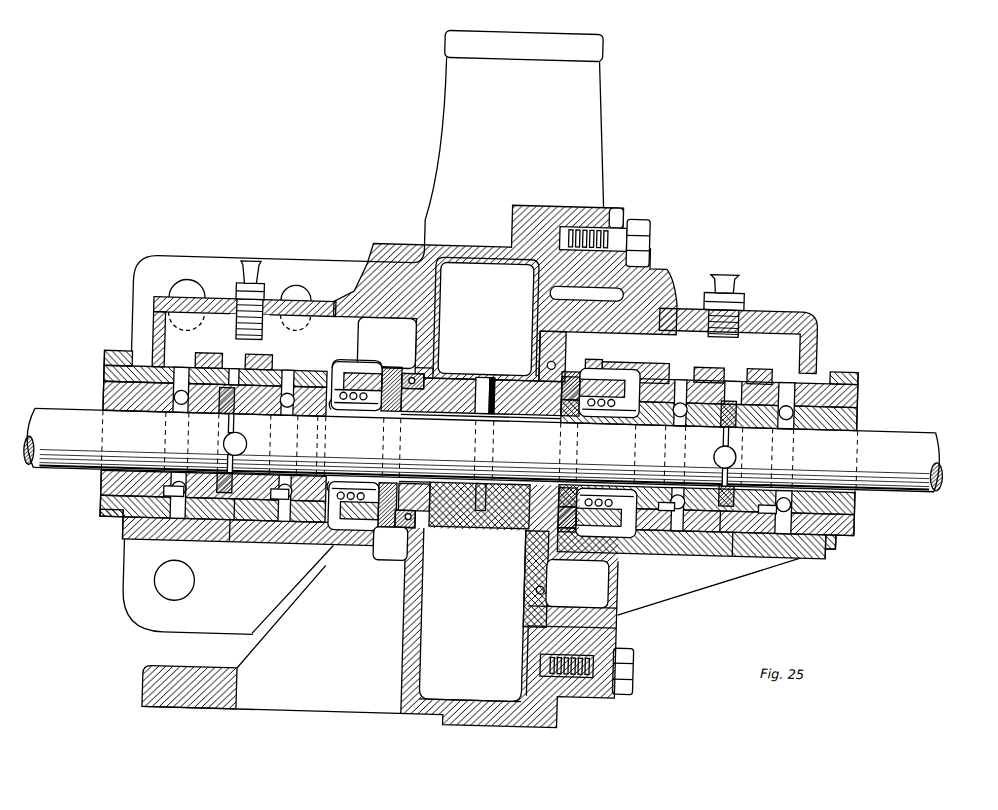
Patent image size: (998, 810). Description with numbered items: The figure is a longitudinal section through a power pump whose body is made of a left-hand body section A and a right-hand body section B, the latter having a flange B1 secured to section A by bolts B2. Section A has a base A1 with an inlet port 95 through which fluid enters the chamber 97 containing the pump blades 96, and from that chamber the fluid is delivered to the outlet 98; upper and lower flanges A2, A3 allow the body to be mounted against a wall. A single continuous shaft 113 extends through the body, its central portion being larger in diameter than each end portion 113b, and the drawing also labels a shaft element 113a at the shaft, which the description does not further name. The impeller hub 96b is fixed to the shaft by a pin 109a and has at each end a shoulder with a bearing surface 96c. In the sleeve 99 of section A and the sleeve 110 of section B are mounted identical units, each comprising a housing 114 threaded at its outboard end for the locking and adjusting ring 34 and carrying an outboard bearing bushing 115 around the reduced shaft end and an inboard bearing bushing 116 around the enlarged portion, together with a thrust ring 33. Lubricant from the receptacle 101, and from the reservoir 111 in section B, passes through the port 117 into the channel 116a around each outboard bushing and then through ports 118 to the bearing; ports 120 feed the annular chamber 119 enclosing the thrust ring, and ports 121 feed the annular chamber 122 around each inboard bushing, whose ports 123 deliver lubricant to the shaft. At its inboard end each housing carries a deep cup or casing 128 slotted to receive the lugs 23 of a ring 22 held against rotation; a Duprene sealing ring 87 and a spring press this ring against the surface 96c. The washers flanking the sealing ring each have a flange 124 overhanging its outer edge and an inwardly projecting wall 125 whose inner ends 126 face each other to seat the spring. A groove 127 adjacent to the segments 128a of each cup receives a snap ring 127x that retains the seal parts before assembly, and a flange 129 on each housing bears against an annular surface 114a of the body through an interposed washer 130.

The ring 22 is at (390, 410).
The lugs 23 is at (390, 377).
The thrust ring 33 is at (232, 535).
The locking and adjusting ring 34 is at (107, 362).
The Duprene sealing ring 87 is at (358, 411).
The inlet port 95 is at (381, 601).
The pump blades 96 is at (505, 309).
The impeller hub 96b is at (462, 380).
The bearing surface 96c is at (413, 405).
The chamber 97 is at (470, 680).
The outlet 98 is at (516, 127).
The sleeve 99 is at (127, 557).
The lubricant receptacle 101 is at (208, 305).
The pin 109a is at (493, 366).
The sleeve 110 is at (783, 550).
The lubricant reservoir 111 is at (683, 305).
The shaft 113 is at (226, 451).
The locating ball 113a is at (234, 428).
The end portion of shaft 113b is at (54, 427).
The housing 114 is at (110, 516).
The annular surface 114a is at (615, 369).
The outboard bearing bushing 115 is at (103, 493).
The inboard bearing bushing 116 is at (236, 540).
The channel 116a is at (163, 537).
The port 117 is at (183, 376).
The ports 118 is at (173, 424).
The annular chamber 119 is at (236, 538).
The ports 120 is at (233, 376).
The ports 121 is at (286, 375).
The annular chamber 122 is at (282, 540).
The ports 123 is at (290, 422).
The flange 124 is at (352, 372).
The radially inwardly projecting wall 125 is at (354, 368).
The inner ends of walls 126 is at (290, 432).
The groove 127 is at (403, 531).
The snap ring 127x is at (420, 376).
The cup or casing 128 is at (357, 532).
The segments 128a is at (549, 373).
The flange 129 is at (595, 365).
The washer 130 is at (377, 537).
The body section A is at (330, 306).
The base A1 is at (195, 688).
The upper flange A2 is at (178, 266).
The lower flange A3 is at (227, 605).
The body section B is at (801, 329).
The flange B1 is at (618, 210).
The bolts B2 is at (645, 240).